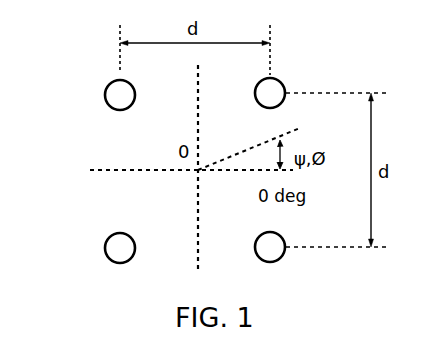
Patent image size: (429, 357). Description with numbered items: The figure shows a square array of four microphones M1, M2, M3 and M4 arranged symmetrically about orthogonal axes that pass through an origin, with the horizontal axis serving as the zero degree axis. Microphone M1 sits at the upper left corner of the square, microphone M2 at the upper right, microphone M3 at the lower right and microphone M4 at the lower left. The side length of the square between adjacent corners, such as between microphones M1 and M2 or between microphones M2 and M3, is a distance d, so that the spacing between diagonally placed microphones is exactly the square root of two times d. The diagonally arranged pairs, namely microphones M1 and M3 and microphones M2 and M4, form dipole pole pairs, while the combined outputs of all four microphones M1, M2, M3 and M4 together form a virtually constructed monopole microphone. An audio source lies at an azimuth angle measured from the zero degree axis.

The microphone M1 is at (102, 95).
The microphone M2 is at (284, 84).
The microphone M3 is at (283, 260).
The microphone M4 is at (102, 248).